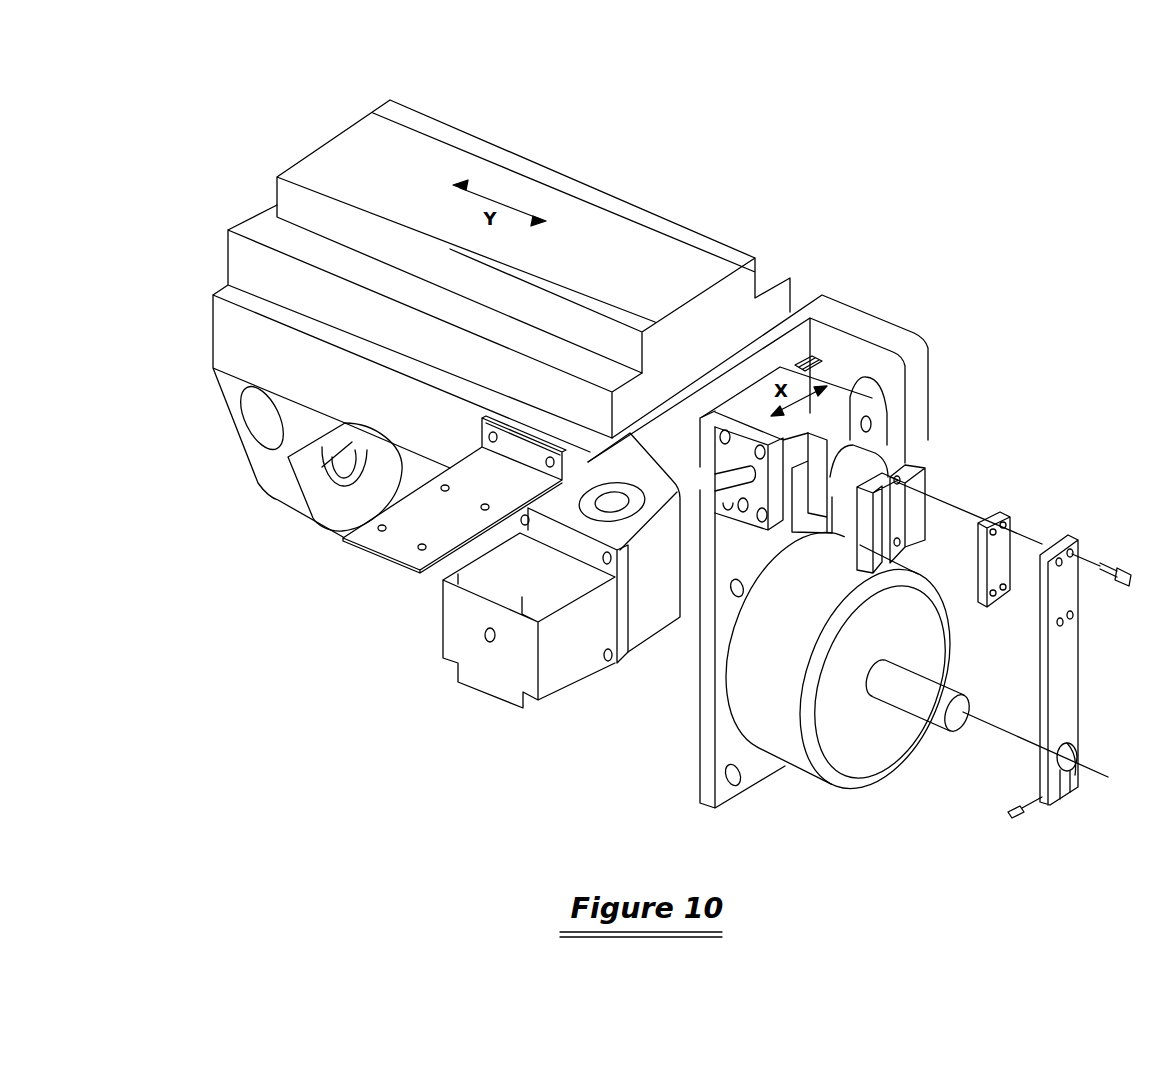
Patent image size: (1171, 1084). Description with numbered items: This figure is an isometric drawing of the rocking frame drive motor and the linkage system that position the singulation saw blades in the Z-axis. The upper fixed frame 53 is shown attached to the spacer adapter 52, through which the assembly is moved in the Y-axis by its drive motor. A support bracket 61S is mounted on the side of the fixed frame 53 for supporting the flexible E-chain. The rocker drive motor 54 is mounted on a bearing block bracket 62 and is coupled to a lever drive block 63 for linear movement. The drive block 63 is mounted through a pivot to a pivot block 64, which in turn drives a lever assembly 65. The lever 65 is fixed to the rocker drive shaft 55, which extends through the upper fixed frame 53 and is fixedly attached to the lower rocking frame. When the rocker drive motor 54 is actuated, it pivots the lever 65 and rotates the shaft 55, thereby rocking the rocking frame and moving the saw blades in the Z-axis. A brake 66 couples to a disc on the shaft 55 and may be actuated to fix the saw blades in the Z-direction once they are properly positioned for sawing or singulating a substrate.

The spacer adapter 52 is at (737, 295).
The upper fixed frame 53 is at (223, 327).
The rocker drive motor 54 is at (480, 682).
The rocker drive shaft 55 is at (907, 705).
The support bracket 61S is at (372, 537).
The bearing block bracket 62 is at (878, 323).
The lever drive block 63 is at (877, 393).
The pivot block 64 is at (903, 462).
The lever assembly 65 is at (1075, 670).
The brake 66 is at (795, 750).